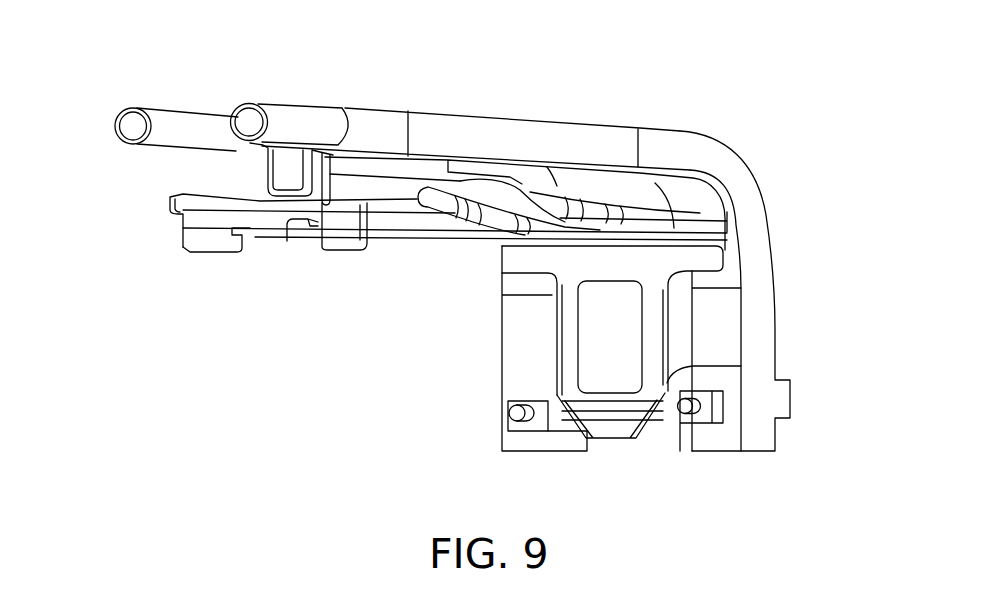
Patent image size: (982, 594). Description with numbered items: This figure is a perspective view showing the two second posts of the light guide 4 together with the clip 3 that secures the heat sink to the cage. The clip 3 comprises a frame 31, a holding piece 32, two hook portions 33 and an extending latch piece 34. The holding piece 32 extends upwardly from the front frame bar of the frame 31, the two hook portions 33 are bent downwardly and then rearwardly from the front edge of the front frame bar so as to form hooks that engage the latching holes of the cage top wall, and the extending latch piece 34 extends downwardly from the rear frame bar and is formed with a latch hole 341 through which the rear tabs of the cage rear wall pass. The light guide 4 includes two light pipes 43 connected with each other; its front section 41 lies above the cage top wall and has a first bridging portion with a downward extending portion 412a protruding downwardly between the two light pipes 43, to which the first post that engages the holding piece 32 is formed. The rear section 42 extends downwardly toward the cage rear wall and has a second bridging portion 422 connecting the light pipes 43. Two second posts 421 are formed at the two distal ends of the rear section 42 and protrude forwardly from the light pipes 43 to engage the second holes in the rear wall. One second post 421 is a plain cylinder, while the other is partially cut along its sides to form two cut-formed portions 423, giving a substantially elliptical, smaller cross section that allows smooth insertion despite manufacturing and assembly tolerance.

The clip 3 is at (173, 228).
The light guide 4 is at (751, 155).
The frame 31 is at (433, 204).
The holding piece 32 is at (318, 242).
The hook portion 33 is at (208, 254).
The extending latch piece 34 is at (520, 264).
The front section 41 is at (292, 97).
The rear section 42 is at (496, 360).
The light pipe 43 is at (525, 325).
The latch hole 341 is at (618, 394).
The downward extending portion 412a is at (283, 178).
The second post 421 is at (510, 413).
The second bridging portion 422 is at (743, 368).
The cut-formed portion 423 is at (680, 392).